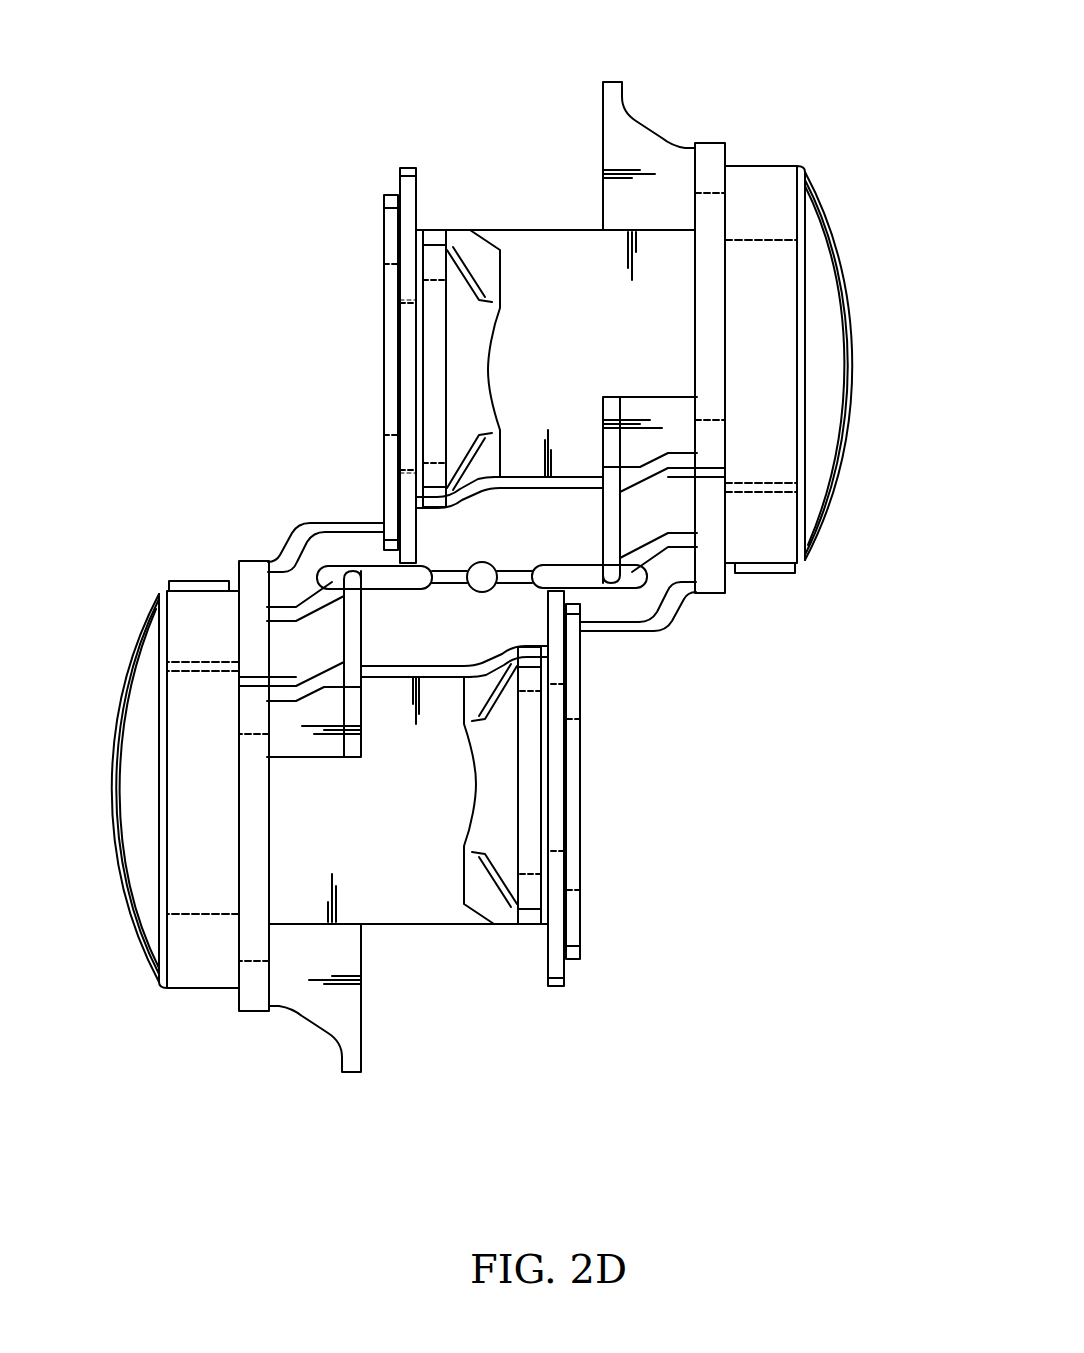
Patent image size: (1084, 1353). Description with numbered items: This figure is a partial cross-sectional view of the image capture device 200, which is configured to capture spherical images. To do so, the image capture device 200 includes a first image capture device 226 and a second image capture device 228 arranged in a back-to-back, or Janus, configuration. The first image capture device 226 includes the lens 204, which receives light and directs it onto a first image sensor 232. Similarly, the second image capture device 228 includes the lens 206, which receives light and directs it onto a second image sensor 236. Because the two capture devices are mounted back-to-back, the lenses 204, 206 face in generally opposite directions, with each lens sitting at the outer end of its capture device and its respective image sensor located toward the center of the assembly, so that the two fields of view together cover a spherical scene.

The image capture device 200 is at (374, 157).
The lens 204 is at (135, 750).
The lens 206 is at (828, 328).
The first image capture device 226 is at (256, 1043).
The second image capture device 228 is at (778, 98).
The first image sensor 232 is at (556, 792).
The second image sensor 236 is at (398, 367).